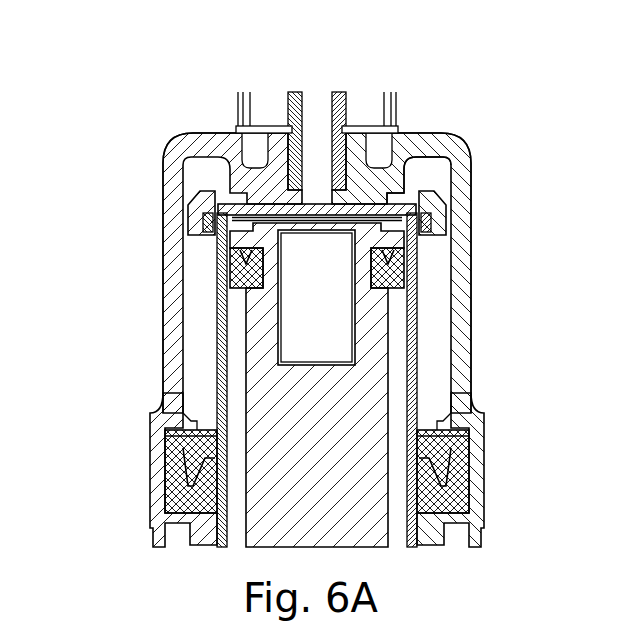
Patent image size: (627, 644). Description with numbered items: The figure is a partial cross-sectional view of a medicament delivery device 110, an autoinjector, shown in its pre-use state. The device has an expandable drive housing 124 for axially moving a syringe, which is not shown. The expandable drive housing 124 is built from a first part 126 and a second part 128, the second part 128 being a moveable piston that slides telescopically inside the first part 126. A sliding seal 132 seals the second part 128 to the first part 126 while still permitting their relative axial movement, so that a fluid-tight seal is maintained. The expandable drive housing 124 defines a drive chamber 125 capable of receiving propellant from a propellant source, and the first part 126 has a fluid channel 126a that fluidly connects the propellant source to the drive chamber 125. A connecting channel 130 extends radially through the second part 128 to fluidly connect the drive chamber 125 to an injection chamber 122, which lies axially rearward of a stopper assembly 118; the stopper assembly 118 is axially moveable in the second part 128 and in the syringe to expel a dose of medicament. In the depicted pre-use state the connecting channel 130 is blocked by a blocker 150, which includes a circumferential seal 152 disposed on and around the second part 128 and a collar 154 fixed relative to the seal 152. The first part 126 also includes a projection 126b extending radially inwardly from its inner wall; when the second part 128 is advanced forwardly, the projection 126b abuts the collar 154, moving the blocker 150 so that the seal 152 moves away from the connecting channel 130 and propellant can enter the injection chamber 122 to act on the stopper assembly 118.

The medicament delivery device 110 is at (498, 120).
The stopper assembly 118 is at (392, 277).
The injection chamber 122 is at (242, 238).
The expandable drive housing 124 is at (478, 237).
The drive chamber 125 is at (424, 178).
The first part 126 is at (178, 190).
The fluid channel 126a is at (330, 198).
The projection 126b is at (487, 430).
The second part 128 is at (222, 318).
The connecting channel 130 is at (400, 249).
The sliding seal 132 is at (178, 490).
The blocker 150 is at (441, 217).
The circumferential seal 152 is at (433, 223).
The collar 154 is at (446, 189).